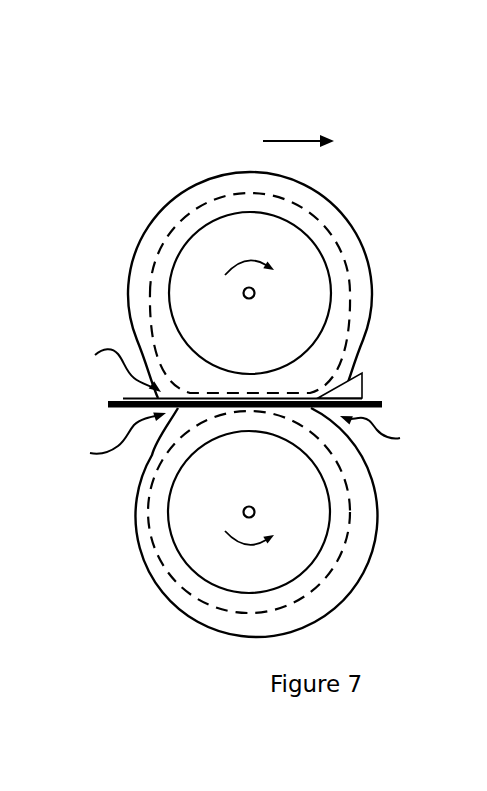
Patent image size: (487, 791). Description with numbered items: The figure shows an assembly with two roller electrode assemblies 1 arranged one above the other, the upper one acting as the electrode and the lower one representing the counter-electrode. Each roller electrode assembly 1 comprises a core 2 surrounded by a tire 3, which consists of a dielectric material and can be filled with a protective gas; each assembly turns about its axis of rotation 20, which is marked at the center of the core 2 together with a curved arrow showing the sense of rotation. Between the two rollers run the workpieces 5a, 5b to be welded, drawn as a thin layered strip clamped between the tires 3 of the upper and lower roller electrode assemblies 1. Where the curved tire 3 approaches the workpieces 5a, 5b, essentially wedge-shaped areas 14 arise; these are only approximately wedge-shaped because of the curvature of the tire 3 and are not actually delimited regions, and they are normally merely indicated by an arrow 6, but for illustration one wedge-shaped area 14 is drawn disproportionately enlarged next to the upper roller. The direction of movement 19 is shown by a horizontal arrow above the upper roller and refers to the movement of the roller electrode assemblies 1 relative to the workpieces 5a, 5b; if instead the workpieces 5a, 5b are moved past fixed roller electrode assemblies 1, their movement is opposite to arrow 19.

The roller electrode assembly 1 is at (141, 186).
The core 2 is at (221, 346).
The tire 3 is at (212, 185).
The workpiece 5a is at (380, 395).
The workpiece 5b is at (108, 405).
The arrow 6 is at (113, 352).
The wedge-shaped area 14 is at (362, 383).
The direction of movement 19 is at (298, 137).
The axis of rotation 20 is at (252, 292).